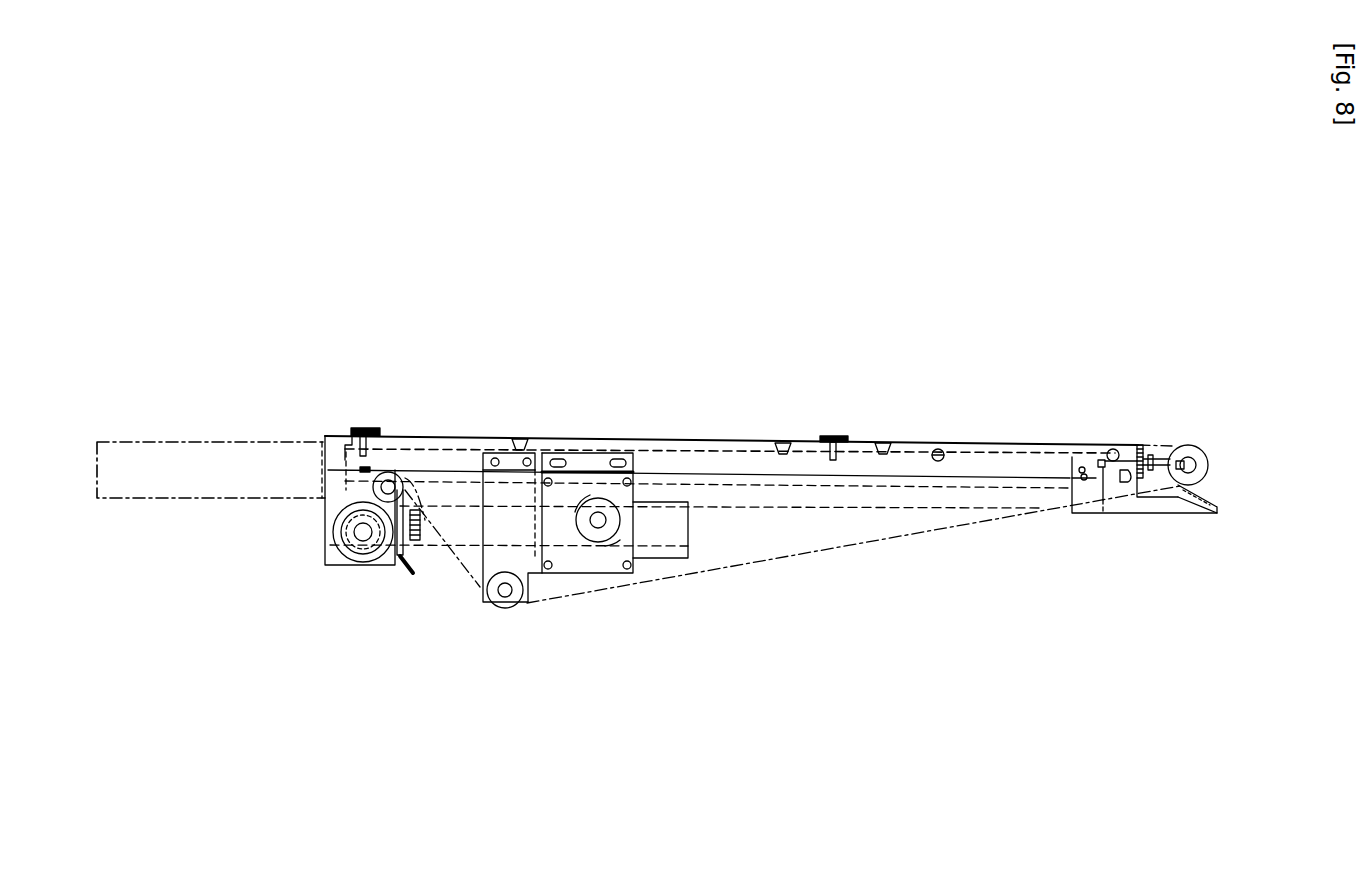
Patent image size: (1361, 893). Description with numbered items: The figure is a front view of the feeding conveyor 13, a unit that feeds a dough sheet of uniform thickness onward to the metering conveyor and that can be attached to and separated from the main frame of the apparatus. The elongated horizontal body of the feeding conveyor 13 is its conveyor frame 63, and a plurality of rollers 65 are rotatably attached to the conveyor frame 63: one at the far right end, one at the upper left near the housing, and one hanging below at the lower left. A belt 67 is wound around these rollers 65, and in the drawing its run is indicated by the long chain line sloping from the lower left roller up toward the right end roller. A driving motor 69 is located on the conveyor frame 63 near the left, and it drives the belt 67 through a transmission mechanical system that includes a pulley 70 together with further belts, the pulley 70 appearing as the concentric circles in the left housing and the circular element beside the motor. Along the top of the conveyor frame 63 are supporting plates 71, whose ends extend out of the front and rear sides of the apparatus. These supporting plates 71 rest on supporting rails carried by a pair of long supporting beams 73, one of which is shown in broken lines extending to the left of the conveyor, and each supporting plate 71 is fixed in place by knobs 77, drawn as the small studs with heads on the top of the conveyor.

The feeding conveyor 13 is at (1033, 430).
The conveyor frame 63 is at (968, 442).
The rollers 65 is at (328, 492).
The belt 67 is at (775, 560).
The driving motor 69 is at (590, 558).
The pulley 70 is at (372, 560).
The supporting plates 71 is at (457, 440).
The supporting beams 73 is at (220, 495).
The knobs 77 is at (370, 428).